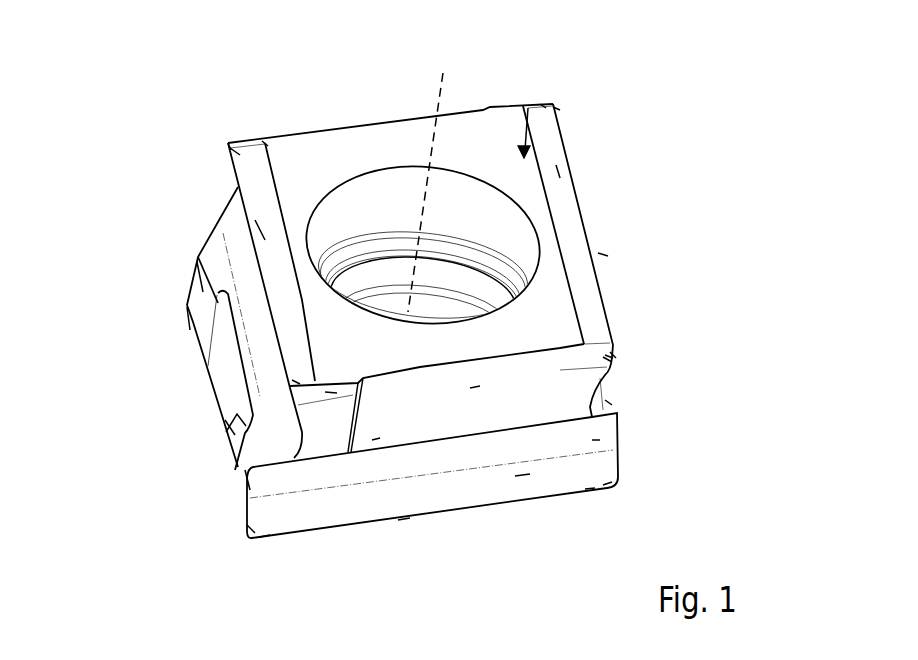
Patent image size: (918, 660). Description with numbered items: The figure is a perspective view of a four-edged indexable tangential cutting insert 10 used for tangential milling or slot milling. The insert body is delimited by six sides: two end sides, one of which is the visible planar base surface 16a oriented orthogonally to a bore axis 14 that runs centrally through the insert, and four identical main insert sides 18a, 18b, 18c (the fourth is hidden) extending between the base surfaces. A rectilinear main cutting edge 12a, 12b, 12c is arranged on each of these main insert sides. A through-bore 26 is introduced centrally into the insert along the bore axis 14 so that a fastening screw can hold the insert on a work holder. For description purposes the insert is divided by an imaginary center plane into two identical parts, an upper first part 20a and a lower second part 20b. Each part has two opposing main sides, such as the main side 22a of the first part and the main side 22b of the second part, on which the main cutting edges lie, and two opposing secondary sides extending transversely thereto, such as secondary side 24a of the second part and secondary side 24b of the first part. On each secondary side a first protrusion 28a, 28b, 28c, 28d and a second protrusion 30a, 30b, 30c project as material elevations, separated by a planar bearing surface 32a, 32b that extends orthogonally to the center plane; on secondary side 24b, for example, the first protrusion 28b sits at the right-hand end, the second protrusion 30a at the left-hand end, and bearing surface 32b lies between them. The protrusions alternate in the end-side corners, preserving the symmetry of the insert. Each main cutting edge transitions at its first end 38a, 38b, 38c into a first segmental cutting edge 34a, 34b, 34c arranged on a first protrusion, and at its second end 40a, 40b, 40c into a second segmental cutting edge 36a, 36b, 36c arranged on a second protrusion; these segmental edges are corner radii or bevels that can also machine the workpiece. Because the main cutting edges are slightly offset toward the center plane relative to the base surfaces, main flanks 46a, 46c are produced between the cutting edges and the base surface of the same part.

The cutting insert 10 is at (708, 122).
The main cutting edge 12a is at (263, 257).
The main cutting edge 12b is at (478, 508).
The main cutting edge 12c is at (586, 204).
The bore axis 14 is at (452, 88).
The base surface 16a is at (332, 152).
The main insert side 18a is at (175, 383).
The main insert side 18b is at (397, 530).
The main insert side 18c is at (614, 247).
The first part 20a is at (533, 107).
The second part 20b is at (600, 442).
The main side 22a is at (247, 311).
The main side 22b is at (527, 473).
The secondary side 24a is at (228, 389).
The secondary side 24b is at (377, 436).
The through-bore 26 is at (397, 220).
The first protrusion 28a is at (267, 140).
The first protrusion 28b is at (605, 358).
The first protrusion 28c is at (610, 403).
The first protrusion 28d is at (203, 290).
The second protrusion 30a is at (343, 383).
The second protrusion 30b is at (245, 482).
The second protrusion 30c is at (528, 108).
The bearing surface 32a is at (230, 425).
The bearing surface 32b is at (472, 388).
The first segmental cutting edge 34a is at (228, 142).
The first segmental cutting edge 34b is at (605, 485).
The first segmental cutting edge 34c is at (607, 357).
The second segmental cutting edge 36a is at (332, 392).
The second segmental cutting edge 36b is at (250, 537).
The second segmental cutting edge 36c is at (542, 105).
The first end 38a is at (233, 152).
The first end 38b is at (588, 490).
The first end 38c is at (612, 355).
The second end 40a is at (292, 392).
The second end 40b is at (265, 543).
The second end 40c is at (557, 108).
The main flank 46a is at (263, 237).
The main flank 46c is at (556, 176).